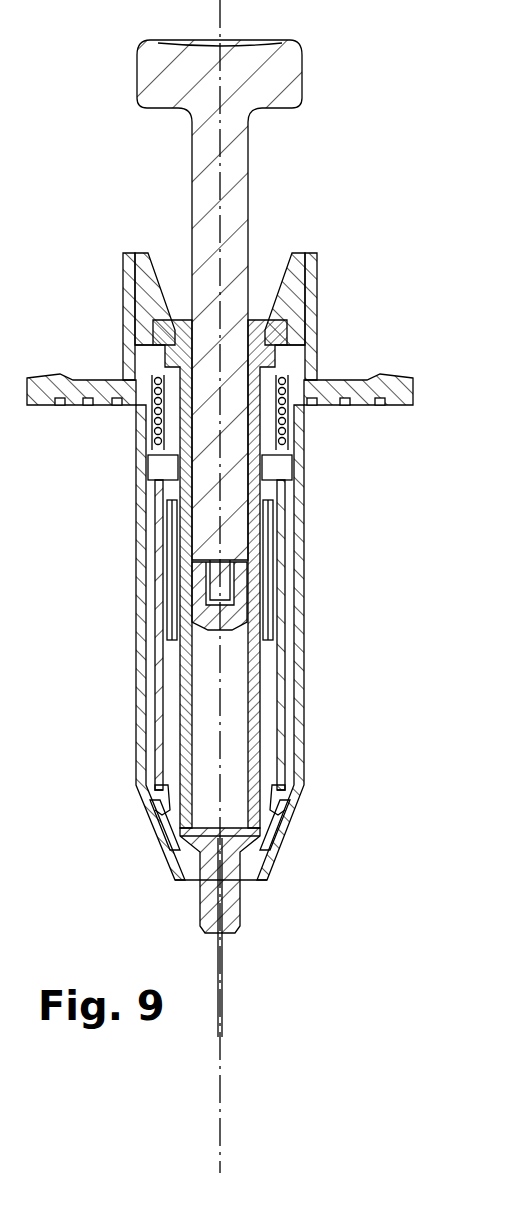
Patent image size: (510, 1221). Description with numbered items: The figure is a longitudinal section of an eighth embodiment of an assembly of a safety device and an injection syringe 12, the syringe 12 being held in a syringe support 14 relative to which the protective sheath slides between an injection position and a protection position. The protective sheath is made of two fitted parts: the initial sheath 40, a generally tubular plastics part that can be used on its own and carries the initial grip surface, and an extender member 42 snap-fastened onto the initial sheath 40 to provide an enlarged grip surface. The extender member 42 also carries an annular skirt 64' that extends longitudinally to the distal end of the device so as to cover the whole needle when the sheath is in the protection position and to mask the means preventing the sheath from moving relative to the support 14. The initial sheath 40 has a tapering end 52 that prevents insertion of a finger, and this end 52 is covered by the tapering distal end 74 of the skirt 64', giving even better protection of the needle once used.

The injection syringe 12 is at (258, 537).
The syringe support 14 is at (263, 650).
The initial sheath 40 is at (283, 773).
The extender member 42 is at (131, 521).
The tapering end 52 is at (285, 823).
The annular skirt 64' is at (323, 642).
The distal end 74 is at (153, 827).